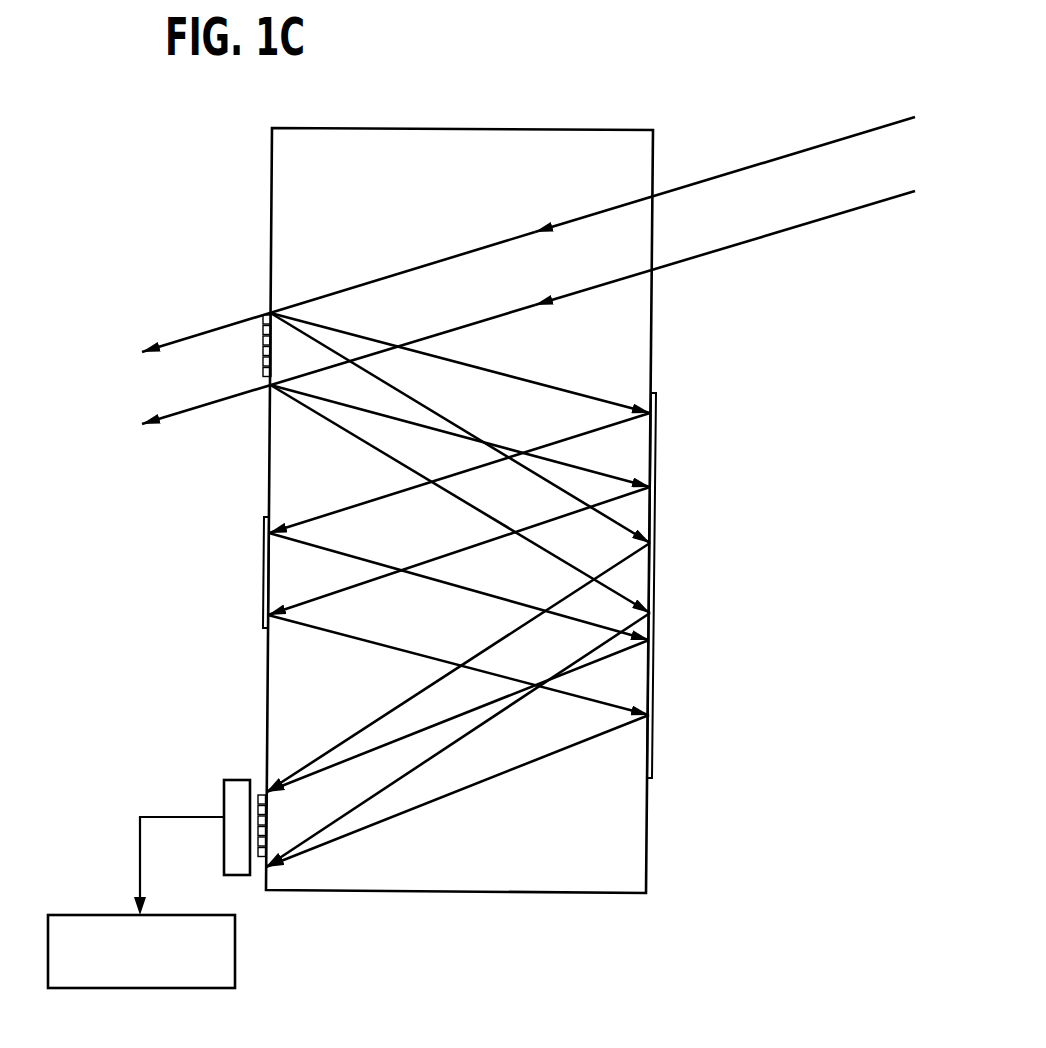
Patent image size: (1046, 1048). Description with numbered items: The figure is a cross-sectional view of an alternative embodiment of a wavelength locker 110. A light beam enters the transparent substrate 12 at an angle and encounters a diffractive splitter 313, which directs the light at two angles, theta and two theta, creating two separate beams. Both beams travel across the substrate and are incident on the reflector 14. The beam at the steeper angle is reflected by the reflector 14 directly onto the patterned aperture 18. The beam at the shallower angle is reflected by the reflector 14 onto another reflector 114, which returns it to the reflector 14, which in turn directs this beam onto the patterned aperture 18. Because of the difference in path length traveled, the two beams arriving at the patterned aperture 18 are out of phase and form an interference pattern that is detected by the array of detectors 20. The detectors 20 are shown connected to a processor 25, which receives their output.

The wavelength locker 110 is at (536, 90).
The transparent substrate 12 is at (654, 135).
The diffractive splitter 313 is at (263, 353).
The reflector 114 is at (263, 572).
The reflector 14 is at (656, 550).
The patterned aperture 18 is at (258, 795).
The array of detectors 20 is at (229, 782).
The processor 25 is at (236, 950).